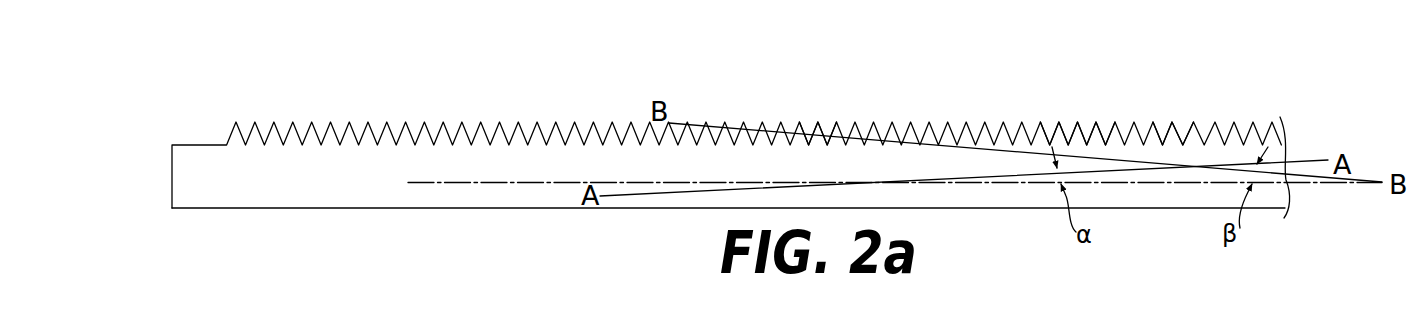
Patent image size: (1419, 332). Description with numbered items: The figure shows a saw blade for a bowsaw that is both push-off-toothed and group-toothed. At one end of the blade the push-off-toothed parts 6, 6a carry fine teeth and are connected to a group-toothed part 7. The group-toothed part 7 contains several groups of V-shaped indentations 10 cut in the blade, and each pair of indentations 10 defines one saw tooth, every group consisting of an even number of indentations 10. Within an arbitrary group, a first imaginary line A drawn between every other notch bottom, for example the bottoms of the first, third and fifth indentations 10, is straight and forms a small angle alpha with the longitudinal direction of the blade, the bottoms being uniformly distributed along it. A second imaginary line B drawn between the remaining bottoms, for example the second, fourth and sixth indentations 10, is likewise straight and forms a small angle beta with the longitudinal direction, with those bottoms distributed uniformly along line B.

The push-off-toothed part 6 is at (311, 124).
The push-off-toothed part 6a is at (816, 130).
The V-shaped indentation 10 is at (1050, 124).
The group-toothed part 7 is at (1171, 126).